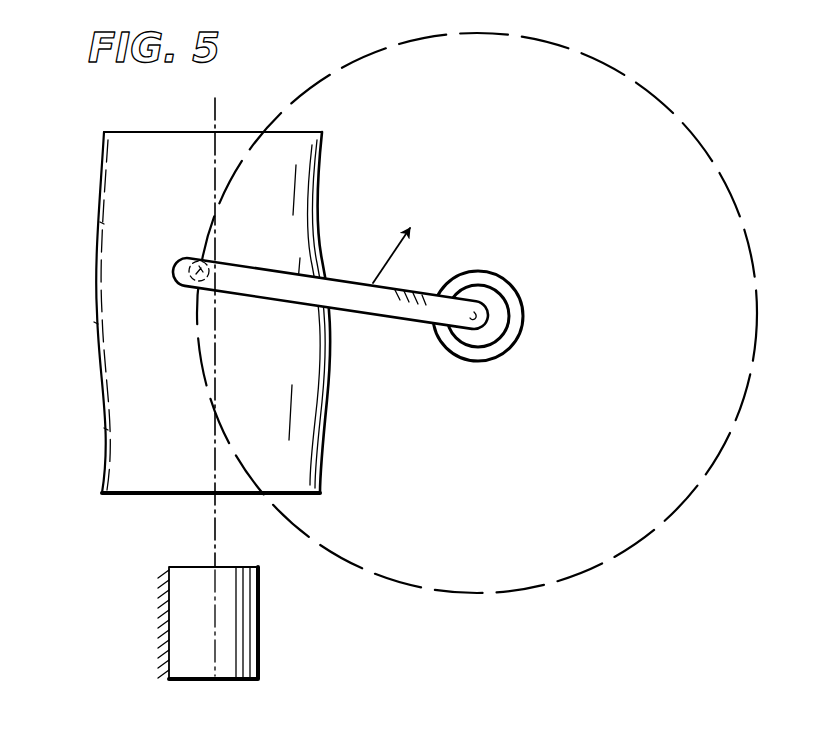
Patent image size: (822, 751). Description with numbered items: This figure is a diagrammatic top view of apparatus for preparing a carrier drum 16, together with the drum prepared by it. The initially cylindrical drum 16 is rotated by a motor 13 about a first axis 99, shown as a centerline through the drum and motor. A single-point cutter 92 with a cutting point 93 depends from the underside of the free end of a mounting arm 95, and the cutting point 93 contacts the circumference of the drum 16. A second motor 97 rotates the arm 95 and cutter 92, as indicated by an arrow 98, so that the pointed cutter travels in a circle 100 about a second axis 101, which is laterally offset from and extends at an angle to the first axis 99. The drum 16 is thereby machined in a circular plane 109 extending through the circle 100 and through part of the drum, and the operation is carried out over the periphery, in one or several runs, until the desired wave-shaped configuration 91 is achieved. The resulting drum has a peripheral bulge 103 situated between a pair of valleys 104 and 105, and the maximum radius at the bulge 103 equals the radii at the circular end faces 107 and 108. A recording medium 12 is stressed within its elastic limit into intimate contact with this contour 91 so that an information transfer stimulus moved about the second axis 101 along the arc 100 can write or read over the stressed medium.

The recording medium 12 is at (100, 178).
The motor 13 is at (224, 681).
The drum 16 is at (143, 500).
The wave-shaped configuration 91 is at (320, 437).
The single-point cutter 92 is at (193, 265).
The cutting point 93 is at (206, 268).
The mounting arm 95 is at (393, 318).
The motor 97 is at (501, 291).
The arrow 98 is at (388, 256).
The first axis 99 is at (217, 383).
The circle 100 is at (620, 70).
The second axis 101 is at (484, 318).
The bulge 103 is at (97, 322).
The valley 104 is at (104, 222).
The valley 105 is at (108, 428).
The circular end face 107 is at (163, 132).
The circular end face 108 is at (303, 497).
The plane 109 is at (690, 238).